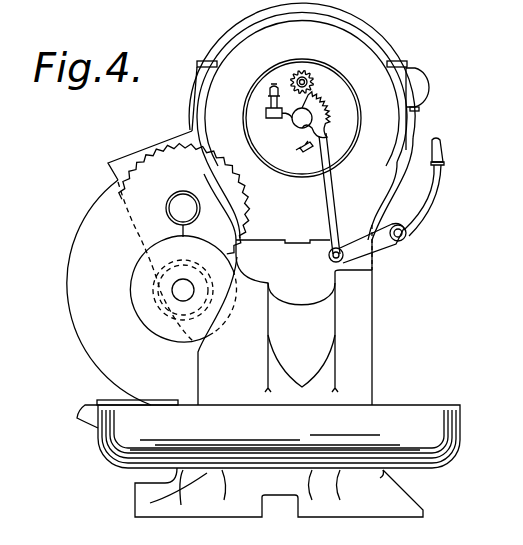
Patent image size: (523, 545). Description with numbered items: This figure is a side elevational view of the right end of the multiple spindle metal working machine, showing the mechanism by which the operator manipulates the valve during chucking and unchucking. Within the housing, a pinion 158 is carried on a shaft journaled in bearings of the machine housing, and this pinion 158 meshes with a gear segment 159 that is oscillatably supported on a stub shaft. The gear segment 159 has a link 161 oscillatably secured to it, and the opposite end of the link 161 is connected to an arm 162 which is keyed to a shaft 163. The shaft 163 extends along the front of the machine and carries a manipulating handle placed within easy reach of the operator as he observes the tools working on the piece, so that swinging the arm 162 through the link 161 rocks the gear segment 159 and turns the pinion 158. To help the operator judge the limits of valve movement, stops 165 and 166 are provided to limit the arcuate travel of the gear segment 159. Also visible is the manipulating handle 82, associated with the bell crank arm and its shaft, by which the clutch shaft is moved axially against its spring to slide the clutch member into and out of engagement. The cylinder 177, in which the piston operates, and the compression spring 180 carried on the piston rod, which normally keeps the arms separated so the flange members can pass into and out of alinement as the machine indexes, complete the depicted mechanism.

The pinion 158 is at (312, 80).
The gear segment 159 is at (318, 116).
The compression spring 180 is at (300, 123).
The stop 166 is at (265, 98).
The stop 165 is at (311, 150).
The link 161 is at (332, 211).
The arm 162 is at (386, 238).
The shaft 163 is at (410, 234).
The cylinder 177 is at (421, 81).
The manipulating handle 82 is at (441, 155).